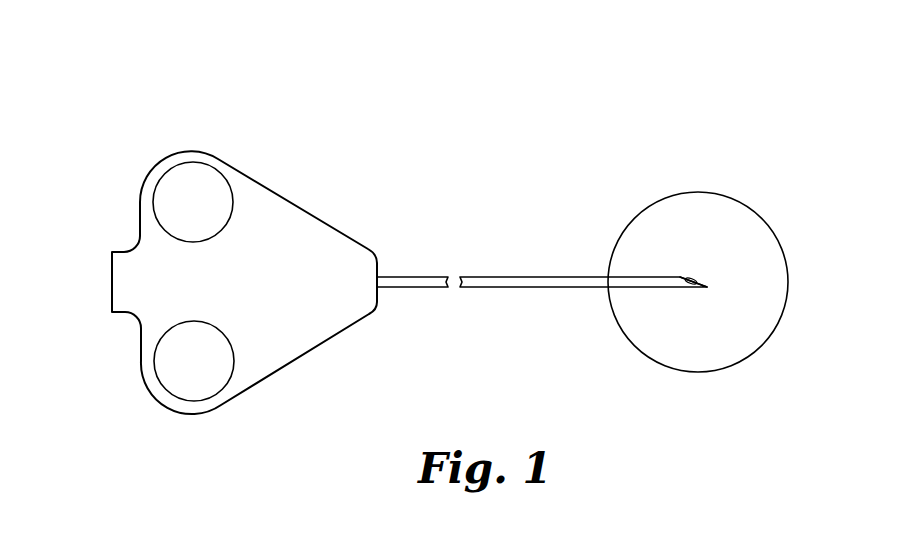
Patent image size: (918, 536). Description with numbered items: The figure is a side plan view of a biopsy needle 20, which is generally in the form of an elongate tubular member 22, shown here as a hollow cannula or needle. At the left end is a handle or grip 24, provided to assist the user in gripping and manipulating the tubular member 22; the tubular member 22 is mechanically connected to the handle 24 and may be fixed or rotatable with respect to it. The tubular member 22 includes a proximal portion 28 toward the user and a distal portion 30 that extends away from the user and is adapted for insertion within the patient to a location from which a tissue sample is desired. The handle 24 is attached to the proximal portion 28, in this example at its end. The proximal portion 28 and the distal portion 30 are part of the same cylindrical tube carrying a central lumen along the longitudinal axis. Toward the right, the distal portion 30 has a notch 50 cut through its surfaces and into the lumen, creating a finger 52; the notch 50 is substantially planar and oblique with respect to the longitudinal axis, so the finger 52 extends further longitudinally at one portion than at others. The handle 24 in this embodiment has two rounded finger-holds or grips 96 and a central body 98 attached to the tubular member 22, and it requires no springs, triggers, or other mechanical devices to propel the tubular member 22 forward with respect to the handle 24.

The biopsy needle 20 is at (444, 254).
The elongate tubular member 22 is at (602, 275).
The handle 24 is at (218, 294).
The proximal portion 28 is at (422, 275).
The distal portion 30 is at (627, 273).
The notch 50 is at (678, 275).
The finger 52 is at (693, 278).
The finger-holds 96 is at (187, 157).
The central body 98 is at (267, 290).